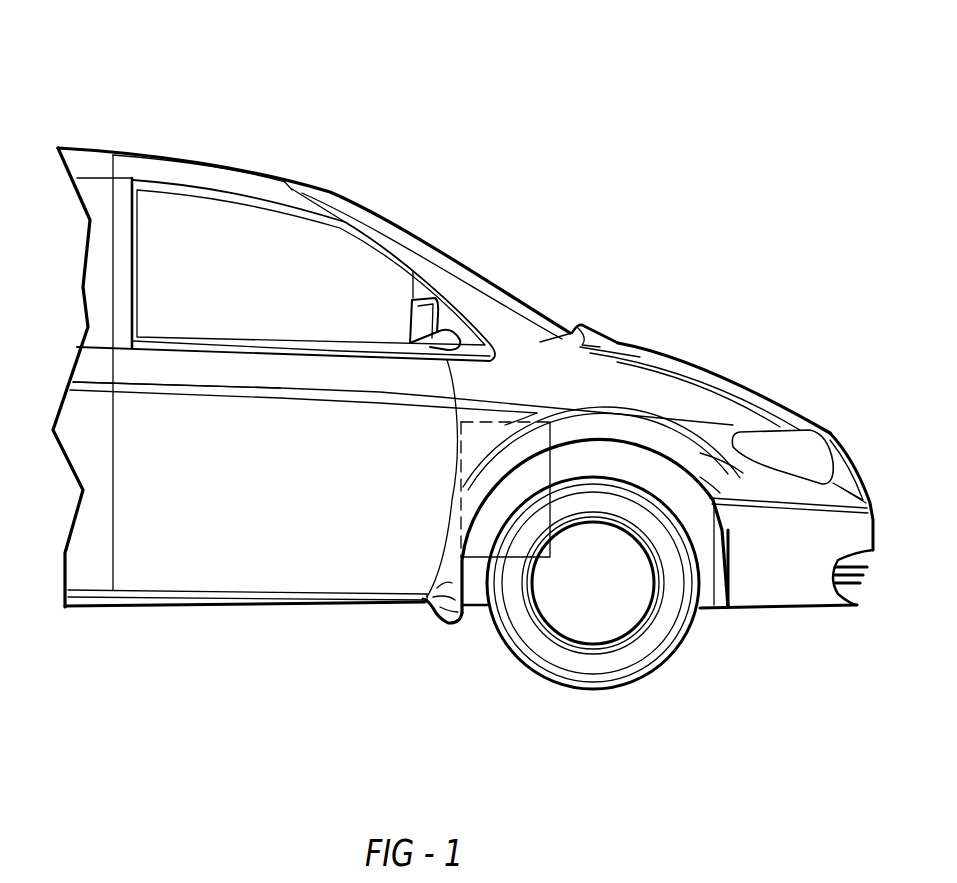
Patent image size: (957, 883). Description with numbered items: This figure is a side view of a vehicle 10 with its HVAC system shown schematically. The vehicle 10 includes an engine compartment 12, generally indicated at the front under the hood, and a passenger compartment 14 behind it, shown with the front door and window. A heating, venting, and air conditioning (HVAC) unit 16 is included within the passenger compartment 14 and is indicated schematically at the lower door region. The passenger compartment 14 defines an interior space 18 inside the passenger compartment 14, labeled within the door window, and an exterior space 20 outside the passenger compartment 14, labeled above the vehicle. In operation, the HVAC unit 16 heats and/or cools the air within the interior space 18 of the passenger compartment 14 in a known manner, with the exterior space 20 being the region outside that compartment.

The vehicle 10 is at (392, 95).
The engine compartment 12 is at (560, 390).
The passenger compartment 14 is at (323, 275).
The heating, venting, and air conditioning (HVAC) unit 16 is at (462, 528).
The interior space 18 is at (241, 292).
The exterior space 20 is at (700, 60).